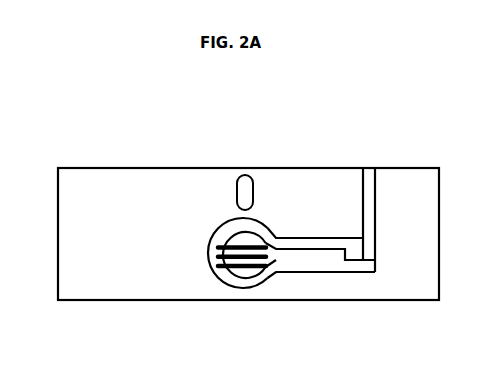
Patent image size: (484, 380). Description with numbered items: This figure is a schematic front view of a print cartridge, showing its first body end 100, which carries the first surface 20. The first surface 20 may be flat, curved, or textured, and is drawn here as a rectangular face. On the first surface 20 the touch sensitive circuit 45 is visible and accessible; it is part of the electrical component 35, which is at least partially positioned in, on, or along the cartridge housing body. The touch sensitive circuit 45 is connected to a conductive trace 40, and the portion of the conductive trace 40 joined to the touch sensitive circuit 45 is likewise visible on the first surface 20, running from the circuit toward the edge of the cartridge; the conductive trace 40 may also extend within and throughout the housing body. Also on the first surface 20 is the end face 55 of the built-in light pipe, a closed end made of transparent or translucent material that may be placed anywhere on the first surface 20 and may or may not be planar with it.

The first body end 100 is at (58, 192).
The first surface 20 is at (118, 209).
The end face 55 is at (253, 183).
The touch sensitive circuit 45 is at (221, 226).
The conductive trace 40 is at (361, 197).
The electrical component 35 is at (364, 263).